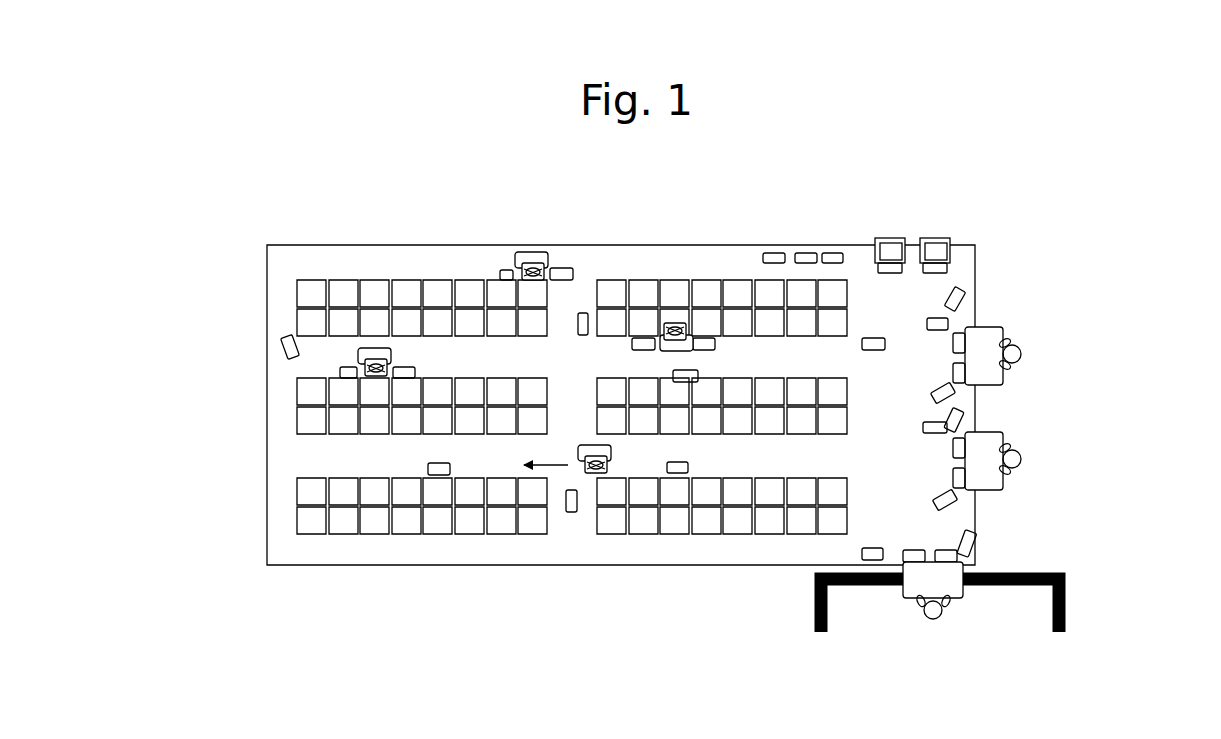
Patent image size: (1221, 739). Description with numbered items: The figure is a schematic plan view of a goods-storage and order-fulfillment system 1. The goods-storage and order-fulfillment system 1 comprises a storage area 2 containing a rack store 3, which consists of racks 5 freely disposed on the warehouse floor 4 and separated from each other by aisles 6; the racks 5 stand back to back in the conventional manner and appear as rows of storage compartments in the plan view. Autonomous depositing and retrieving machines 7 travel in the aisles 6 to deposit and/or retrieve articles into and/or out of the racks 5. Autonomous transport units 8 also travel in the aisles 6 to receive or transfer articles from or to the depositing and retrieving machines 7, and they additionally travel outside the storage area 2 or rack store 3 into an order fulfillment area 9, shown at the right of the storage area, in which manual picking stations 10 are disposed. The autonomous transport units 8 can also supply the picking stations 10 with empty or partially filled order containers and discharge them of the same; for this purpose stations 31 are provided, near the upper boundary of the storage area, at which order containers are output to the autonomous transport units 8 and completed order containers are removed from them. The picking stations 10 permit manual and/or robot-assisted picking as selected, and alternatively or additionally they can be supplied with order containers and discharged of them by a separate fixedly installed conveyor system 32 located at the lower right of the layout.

The goods-storage and order-fulfillment system 1 is at (650, 385).
The storage area 2 is at (388, 258).
The rack store 3 is at (281, 293).
The warehouse floor 4 is at (283, 464).
The rack 5 is at (466, 529).
The aisle 6 is at (350, 457).
The autonomous depositing and retrieving machine 7 is at (561, 255).
The autonomous transport unit 8 is at (280, 353).
The order fulfillment area 9 is at (909, 298).
The picking station 10 is at (985, 392).
The station 31 is at (940, 232).
The fixedly installed conveyor system 32 is at (1076, 600).